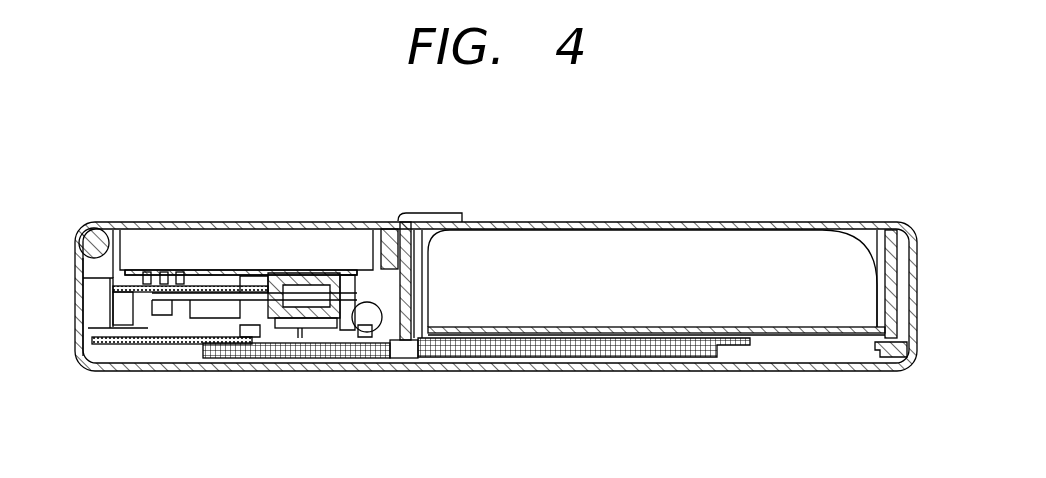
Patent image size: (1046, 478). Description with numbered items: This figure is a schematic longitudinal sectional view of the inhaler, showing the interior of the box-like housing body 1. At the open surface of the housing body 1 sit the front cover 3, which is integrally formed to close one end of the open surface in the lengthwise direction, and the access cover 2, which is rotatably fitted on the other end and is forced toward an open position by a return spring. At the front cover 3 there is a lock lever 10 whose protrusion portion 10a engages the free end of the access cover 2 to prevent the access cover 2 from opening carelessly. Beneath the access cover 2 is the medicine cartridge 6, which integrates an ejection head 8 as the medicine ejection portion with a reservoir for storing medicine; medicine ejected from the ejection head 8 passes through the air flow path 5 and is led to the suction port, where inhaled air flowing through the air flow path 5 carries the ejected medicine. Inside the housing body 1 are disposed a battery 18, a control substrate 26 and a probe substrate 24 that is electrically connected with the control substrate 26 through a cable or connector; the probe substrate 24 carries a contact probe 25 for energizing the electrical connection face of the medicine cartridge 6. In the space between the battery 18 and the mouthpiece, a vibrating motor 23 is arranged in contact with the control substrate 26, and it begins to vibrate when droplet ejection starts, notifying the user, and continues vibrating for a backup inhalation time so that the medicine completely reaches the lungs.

The housing body 1 is at (837, 373).
The access cover 2 is at (238, 221).
The front cover 3 is at (652, 222).
The air flow path 5 is at (258, 306).
The medicine cartridge 6 is at (178, 244).
The ejection head 8 is at (310, 274).
The lock lever 10 is at (445, 216).
The protrusion portion 10a is at (383, 225).
The battery 18 is at (763, 307).
The vibrating motor 23 is at (367, 322).
The probe substrate 24 is at (133, 293).
The contact probe 25 is at (175, 292).
The control substrate 26 is at (550, 350).